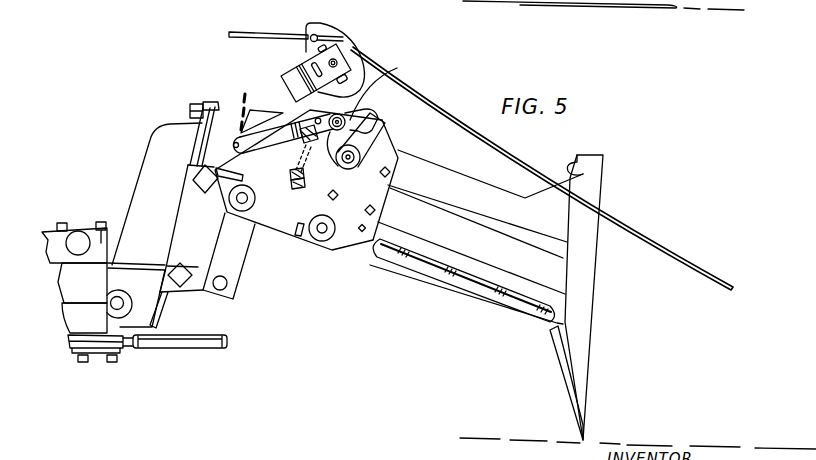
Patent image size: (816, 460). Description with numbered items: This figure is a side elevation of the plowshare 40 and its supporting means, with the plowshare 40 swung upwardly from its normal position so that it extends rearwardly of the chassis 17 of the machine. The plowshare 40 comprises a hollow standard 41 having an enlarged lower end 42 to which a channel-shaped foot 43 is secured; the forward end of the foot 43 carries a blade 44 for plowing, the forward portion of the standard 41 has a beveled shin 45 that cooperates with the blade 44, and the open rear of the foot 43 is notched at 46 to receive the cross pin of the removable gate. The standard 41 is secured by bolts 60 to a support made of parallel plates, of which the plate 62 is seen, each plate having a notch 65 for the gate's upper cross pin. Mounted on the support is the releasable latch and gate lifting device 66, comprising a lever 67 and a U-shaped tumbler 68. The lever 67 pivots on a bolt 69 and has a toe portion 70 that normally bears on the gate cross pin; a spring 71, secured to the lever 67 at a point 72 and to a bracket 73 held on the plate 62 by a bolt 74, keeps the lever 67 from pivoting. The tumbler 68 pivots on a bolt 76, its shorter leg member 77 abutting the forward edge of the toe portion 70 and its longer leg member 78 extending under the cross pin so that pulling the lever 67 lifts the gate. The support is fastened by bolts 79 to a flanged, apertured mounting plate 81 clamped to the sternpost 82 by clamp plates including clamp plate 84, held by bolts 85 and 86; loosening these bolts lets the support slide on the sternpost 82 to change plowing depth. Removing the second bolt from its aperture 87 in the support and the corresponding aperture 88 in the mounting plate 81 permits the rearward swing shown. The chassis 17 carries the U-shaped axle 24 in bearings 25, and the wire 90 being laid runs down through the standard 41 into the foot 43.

The chassis 17 is at (148, 315).
The U-shaped axle 24 is at (78, 240).
The bearings 25 is at (100, 222).
The plowshare 40 is at (453, 295).
The hollow standard 41 is at (485, 186).
The enlarged lower end 42 is at (211, 0).
The foot 43 is at (124, 0).
The blade 44 is at (568, 387).
The beveled shin 45 is at (517, 305).
The notch 46 is at (580, 168).
The bolts 60 is at (338, 199).
The plate 62 is at (298, 237).
The notch 65 is at (381, 117).
The releasable latch and gate lifting device 66 is at (363, 112).
The lever 67 is at (282, 118).
The tumbler 68 is at (394, 148).
The bolt 69 is at (372, 80).
The toe portion 70 is at (392, 82).
The spring 71 is at (303, 135).
The point 72 is at (305, 77).
The bracket 73 is at (290, 173).
The bolt 74 is at (291, 190).
The bolt 76 is at (391, 172).
The leg member 77 is at (336, 161).
The leg member 78 is at (375, 138).
The bolt 79 is at (235, 204).
The mounting plate 81 is at (237, 253).
The sternpost 82 is at (202, 138).
The clamp plate 84 is at (177, 225).
The bolt 85 is at (195, 181).
The bolt 86 is at (170, 268).
The aperture 87 is at (320, 241).
The aperture 88 is at (227, 283).
The wire 90 is at (626, 231).